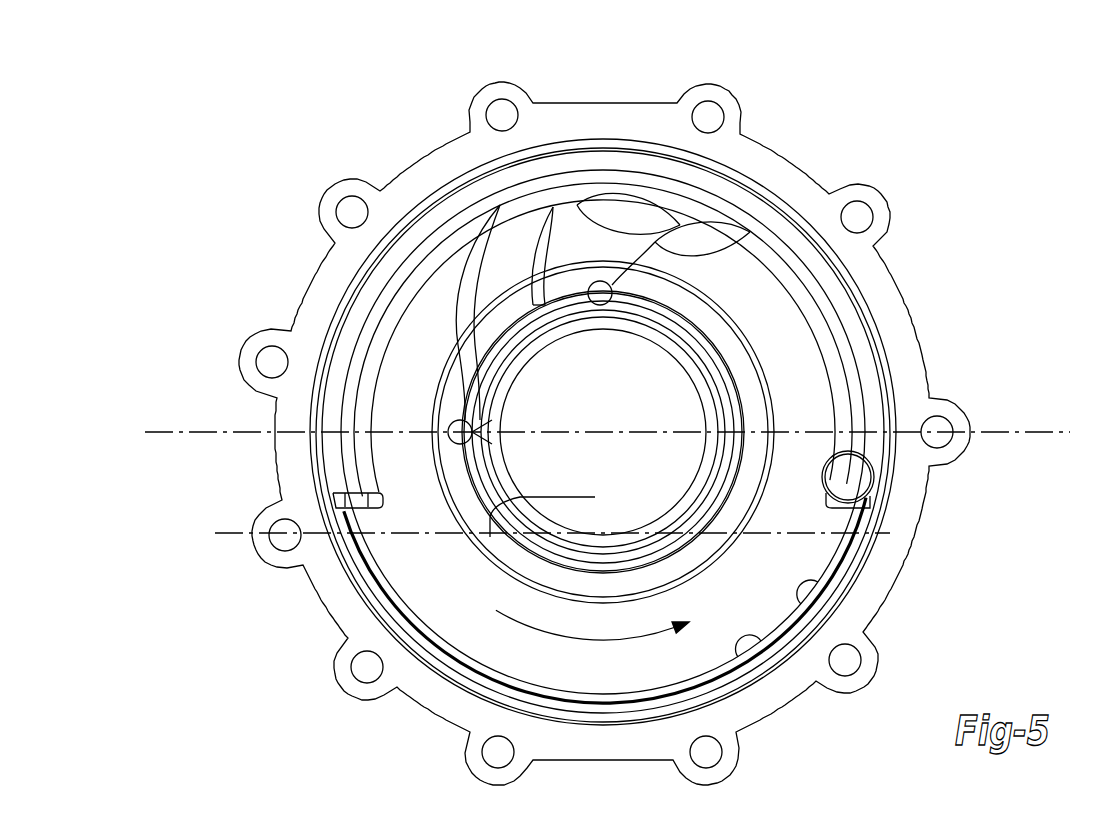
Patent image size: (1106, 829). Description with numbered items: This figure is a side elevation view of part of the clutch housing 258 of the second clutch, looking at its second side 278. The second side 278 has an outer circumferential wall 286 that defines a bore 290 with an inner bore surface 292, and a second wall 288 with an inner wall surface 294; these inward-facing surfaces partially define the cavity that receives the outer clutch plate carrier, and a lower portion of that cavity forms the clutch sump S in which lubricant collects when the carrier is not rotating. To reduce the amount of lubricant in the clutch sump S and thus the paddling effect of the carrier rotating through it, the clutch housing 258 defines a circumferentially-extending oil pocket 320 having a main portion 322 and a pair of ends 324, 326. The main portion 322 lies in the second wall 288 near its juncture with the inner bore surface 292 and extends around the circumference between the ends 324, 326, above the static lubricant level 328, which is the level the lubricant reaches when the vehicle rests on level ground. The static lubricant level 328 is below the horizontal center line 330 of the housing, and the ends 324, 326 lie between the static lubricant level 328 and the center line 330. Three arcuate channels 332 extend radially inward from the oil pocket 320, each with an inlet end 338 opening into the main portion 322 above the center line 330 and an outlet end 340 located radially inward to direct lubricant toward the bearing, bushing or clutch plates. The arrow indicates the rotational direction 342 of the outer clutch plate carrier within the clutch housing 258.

The clutch housing 258 is at (890, 300).
The second side 278 is at (762, 714).
The outer circumferential wall 286 is at (812, 584).
The second wall 288 is at (790, 555).
The bore 290 is at (378, 612).
The inner bore surface 292 is at (810, 642).
The inner wall surface 294 is at (790, 370).
The oil pocket 320 is at (455, 205).
The main portion 322 is at (375, 320).
The end 324 is at (875, 478).
The end 326 is at (348, 506).
The static lubricant level 328 is at (552, 509).
The horizontal center line 330 is at (1034, 428).
The channel 332 is at (645, 212).
The inlet end 338 is at (578, 208).
The outlet end 340 is at (533, 307).
The rotational direction 342 is at (593, 643).
The clutch sump S is at (557, 680).